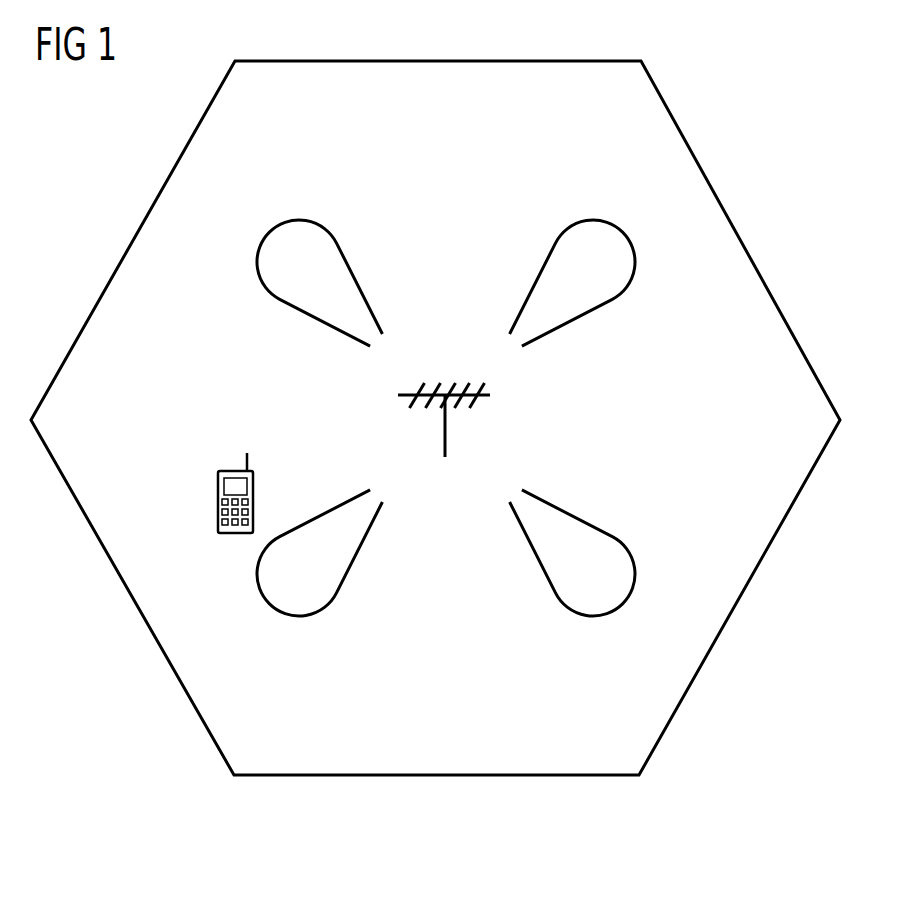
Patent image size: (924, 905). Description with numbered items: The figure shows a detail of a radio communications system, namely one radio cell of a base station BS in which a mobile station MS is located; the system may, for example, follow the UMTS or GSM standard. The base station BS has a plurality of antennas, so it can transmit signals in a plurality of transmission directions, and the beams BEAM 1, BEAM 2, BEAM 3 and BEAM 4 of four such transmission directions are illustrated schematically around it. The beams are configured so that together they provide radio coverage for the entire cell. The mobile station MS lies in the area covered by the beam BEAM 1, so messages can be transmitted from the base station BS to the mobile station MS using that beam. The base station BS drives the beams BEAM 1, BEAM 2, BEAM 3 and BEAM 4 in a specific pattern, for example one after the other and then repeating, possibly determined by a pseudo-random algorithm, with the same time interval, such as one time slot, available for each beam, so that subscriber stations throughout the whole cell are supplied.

The beam BEAM 1 is at (312, 316).
The beam BEAM 2 is at (580, 316).
The beam BEAM 3 is at (578, 613).
The beam BEAM 4 is at (312, 613).
The base station BS is at (445, 428).
The mobile station MS is at (218, 503).